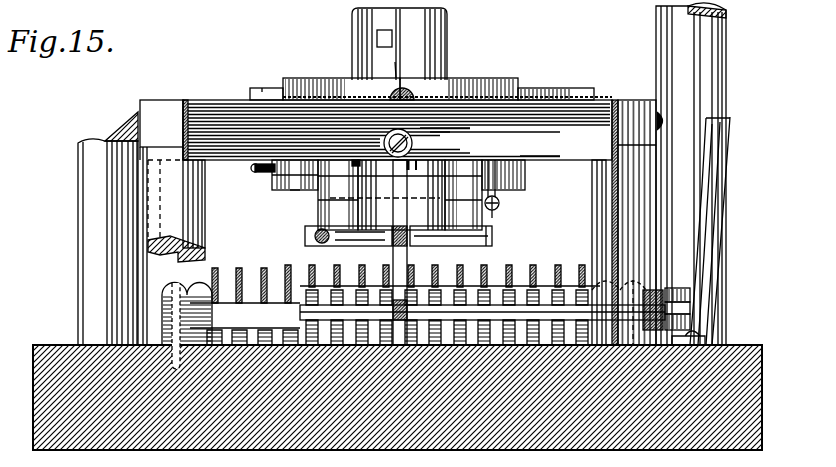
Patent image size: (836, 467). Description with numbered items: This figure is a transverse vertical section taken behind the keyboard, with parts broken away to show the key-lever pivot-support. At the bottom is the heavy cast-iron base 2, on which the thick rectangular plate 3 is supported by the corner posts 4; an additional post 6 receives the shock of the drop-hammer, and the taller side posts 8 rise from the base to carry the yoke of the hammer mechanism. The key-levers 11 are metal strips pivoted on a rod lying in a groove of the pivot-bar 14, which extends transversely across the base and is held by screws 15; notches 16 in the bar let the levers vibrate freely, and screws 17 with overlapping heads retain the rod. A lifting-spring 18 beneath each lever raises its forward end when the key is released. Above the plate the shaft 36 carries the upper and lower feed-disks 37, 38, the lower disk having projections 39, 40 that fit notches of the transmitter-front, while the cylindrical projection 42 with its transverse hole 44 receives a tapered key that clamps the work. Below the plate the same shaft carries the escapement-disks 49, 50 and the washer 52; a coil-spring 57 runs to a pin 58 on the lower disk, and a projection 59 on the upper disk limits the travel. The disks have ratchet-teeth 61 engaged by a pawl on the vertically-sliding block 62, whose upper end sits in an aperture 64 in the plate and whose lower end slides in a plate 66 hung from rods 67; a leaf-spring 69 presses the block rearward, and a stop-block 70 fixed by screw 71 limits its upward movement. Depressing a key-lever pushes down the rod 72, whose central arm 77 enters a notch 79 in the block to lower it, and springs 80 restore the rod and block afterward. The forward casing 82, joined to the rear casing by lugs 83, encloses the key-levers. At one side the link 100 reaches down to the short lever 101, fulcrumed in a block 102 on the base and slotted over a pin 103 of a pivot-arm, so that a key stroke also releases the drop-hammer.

The base 2 is at (52, 357).
The plate 3 is at (397, 130).
The posts 4 is at (228, 190).
The additional post 6 is at (400, 62).
The posts 8 is at (100, 173).
The key-levers 11 is at (264, 270).
The pivot-bar 14 is at (287, 266).
The screws 15 is at (178, 278).
The notches 16 is at (239, 268).
The screws 17 is at (214, 286).
The lifting-spring 18 is at (270, 330).
The shaft 36 is at (365, 272).
The upper disk 37 is at (487, 80).
The lower disk 38 is at (345, 92).
The projection 39 is at (566, 90).
The projection 40 is at (262, 88).
The cylindrical projection 42 is at (447, 28).
The transverse hole 44 is at (377, 37).
The upper escapement-disk 49 is at (275, 178).
The lower escapement-disk 50 is at (292, 190).
The washer 52 is at (348, 198).
The coil-spring 57 is at (497, 210).
The pin 58 is at (500, 203).
The projection 59 is at (252, 172).
The ratchet-teeth 61 is at (495, 162).
The vertically-sliding block 62 is at (386, 150).
The aperture 64 is at (400, 90).
The plate 66 is at (492, 240).
The rods 67 is at (400, 195).
The leaf-spring 69 is at (330, 228).
The stop-block 70 is at (412, 163).
The screw 71 is at (422, 165).
The rod 72 is at (590, 318).
The vertical arm 77 is at (410, 268).
The notch 79 is at (357, 162).
The springs 80 is at (700, 343).
The forward casing 82 is at (613, 140).
The overlapping lugs 83 is at (138, 108).
The link 100 is at (718, 150).
The short lever 101 is at (700, 296).
The block 102 is at (697, 306).
The pin 103 is at (680, 318).